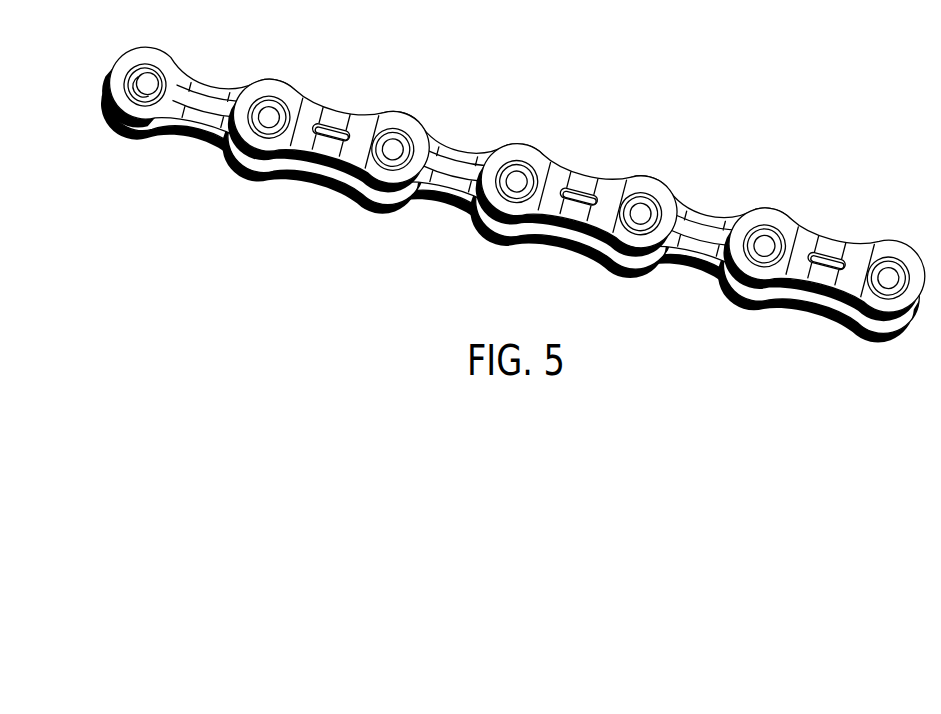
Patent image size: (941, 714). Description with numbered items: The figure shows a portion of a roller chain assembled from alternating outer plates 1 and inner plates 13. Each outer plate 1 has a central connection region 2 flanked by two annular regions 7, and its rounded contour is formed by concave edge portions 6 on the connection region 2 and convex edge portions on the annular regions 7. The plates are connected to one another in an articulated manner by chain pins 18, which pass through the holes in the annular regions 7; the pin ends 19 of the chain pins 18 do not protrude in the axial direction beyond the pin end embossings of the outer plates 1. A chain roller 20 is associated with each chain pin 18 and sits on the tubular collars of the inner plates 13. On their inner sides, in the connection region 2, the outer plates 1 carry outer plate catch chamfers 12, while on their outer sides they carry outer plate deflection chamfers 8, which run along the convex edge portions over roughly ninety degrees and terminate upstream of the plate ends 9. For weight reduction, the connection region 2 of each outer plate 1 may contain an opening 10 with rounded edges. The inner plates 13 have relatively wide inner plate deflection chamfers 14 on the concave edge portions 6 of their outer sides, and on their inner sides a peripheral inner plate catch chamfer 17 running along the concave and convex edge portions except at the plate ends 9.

The outer plate 1 is at (348, 96).
The connection region 2 is at (830, 247).
The concave edge portions 6 is at (338, 103).
The annular regions 7 is at (505, 142).
The outer plate deflection chamfer 8 is at (716, 292).
The plate ends 9 is at (90, 99).
The opening 10 is at (577, 180).
The outer plate catch chamfer 12 is at (311, 177).
The inner plate 13 is at (702, 203).
The inner plate deflection chamfer 14 is at (448, 185).
The inner plate catch chamfer 17 is at (196, 138).
The chain pin 18 is at (766, 244).
The pin ends 19 is at (393, 150).
The chain roller 20 is at (742, 292).